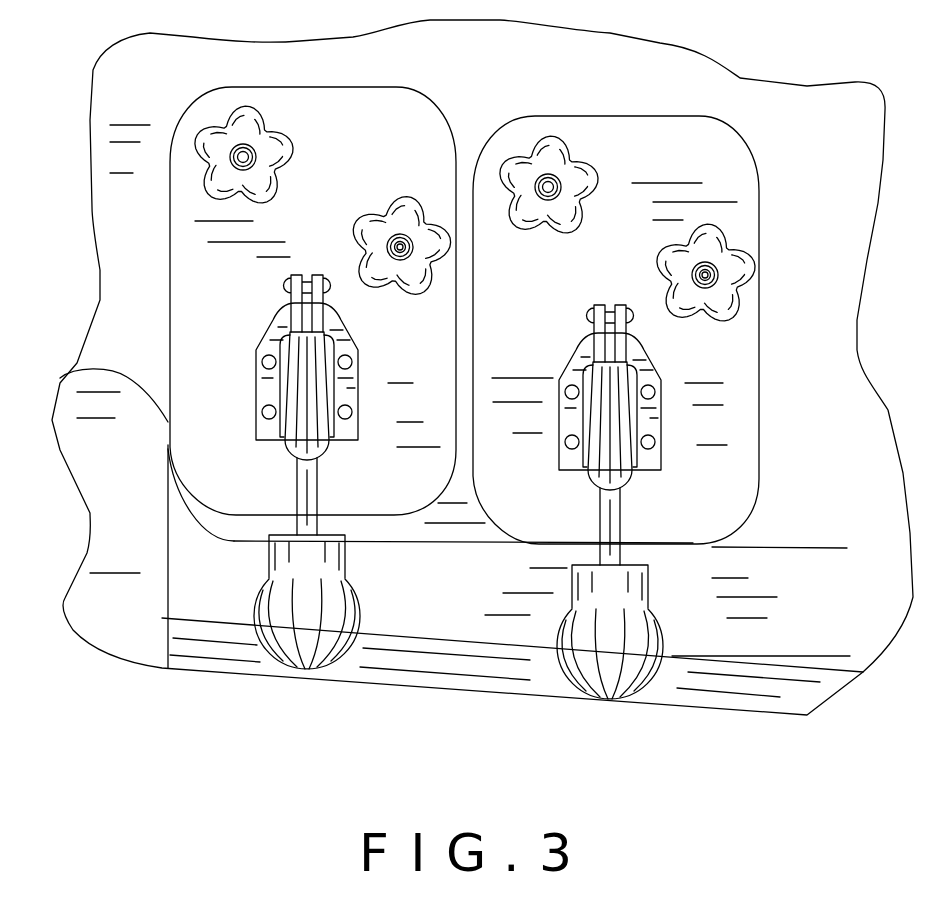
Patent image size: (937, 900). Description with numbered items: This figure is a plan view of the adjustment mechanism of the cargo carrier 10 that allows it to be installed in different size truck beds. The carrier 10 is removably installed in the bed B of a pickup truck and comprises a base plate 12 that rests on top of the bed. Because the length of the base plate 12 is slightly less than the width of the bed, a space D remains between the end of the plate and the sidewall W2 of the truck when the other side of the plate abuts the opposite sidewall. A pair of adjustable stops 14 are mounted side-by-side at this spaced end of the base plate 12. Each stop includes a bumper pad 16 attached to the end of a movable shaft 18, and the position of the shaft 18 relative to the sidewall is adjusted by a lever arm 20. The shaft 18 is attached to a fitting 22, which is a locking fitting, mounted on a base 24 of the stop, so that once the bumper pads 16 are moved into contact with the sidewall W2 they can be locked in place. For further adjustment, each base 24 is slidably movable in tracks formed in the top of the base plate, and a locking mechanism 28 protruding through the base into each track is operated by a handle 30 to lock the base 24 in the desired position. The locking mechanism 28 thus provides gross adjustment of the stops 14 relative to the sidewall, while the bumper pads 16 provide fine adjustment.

The cargo carrier 10 is at (207, 557).
The base plate 12 is at (483, 541).
The adjustable stop 14 is at (332, 231).
The bumper pad 16 is at (327, 647).
The movable shaft 18 is at (297, 490).
The lever arm 20 is at (303, 393).
The fitting 22 is at (275, 322).
The base 24 is at (170, 222).
The locking mechanism 28 is at (428, 215).
The handle 30 is at (207, 127).
The bed B is at (145, 263).
The space D is at (825, 549).
The sidewall W2 is at (808, 686).